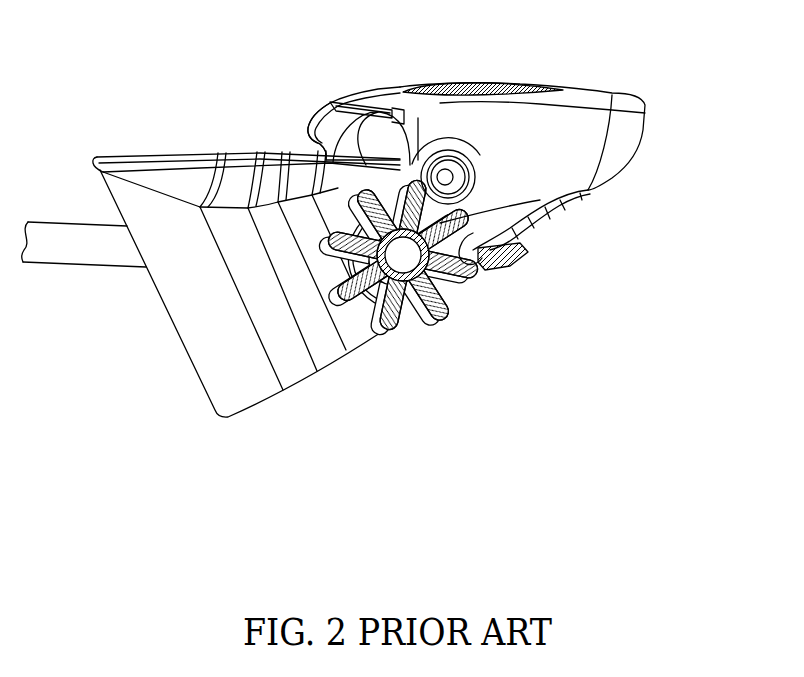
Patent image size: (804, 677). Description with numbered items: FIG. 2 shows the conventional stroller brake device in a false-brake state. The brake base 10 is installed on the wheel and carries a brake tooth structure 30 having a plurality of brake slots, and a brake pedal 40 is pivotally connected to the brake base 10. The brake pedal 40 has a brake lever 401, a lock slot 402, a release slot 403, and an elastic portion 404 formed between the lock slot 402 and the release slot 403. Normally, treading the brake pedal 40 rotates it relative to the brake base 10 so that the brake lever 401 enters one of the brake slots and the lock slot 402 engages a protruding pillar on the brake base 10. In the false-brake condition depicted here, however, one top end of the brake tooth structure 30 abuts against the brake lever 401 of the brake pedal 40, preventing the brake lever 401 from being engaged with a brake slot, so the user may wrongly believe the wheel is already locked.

The brake base 10 is at (295, 365).
The brake tooth structure 30 is at (443, 283).
The brake pedal 40 is at (627, 132).
The brake lever 401 is at (500, 260).
The lock slot 402 is at (540, 223).
The release slot 403 is at (397, 125).
The elastic portion 404 is at (368, 165).